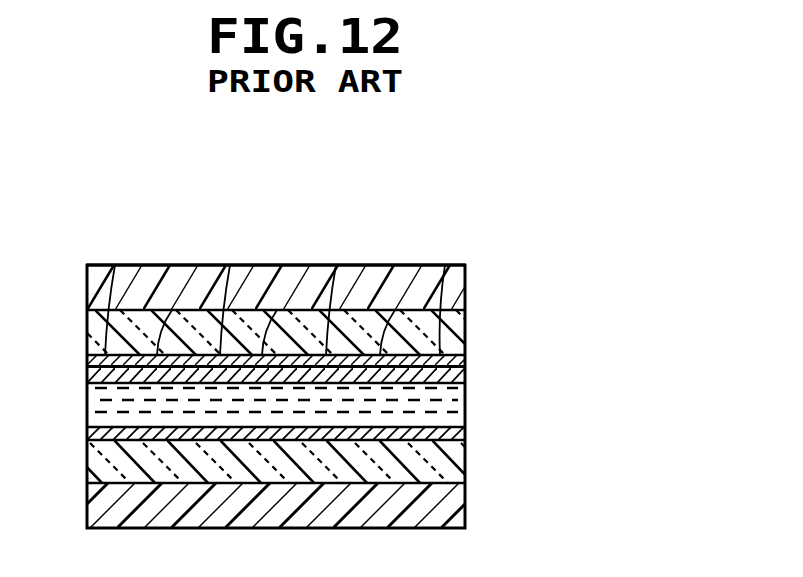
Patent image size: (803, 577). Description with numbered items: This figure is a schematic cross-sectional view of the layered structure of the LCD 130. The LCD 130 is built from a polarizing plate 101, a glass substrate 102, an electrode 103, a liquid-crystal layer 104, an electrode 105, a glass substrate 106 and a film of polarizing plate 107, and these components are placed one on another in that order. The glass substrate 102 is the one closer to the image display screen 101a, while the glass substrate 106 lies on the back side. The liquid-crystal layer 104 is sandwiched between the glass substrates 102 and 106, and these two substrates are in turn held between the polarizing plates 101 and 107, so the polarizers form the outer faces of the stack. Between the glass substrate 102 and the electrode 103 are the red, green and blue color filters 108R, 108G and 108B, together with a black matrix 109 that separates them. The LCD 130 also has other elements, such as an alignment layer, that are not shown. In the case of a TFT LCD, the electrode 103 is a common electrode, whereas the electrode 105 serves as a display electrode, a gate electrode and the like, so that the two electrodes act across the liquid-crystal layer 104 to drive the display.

The LCD 130 is at (441, 175).
The image display screen 101a is at (466, 267).
The polarizing plate 101 is at (455, 287).
The glass substrate 102 is at (455, 323).
The electrode 103 is at (455, 366).
The liquid-crystal layer 104 is at (465, 397).
The electrode 105 is at (465, 432).
The glass substrate 106 is at (465, 464).
The polarizing plate 107 is at (465, 502).
The R color filter 108R is at (172, 310).
The G color filter 108G is at (277, 310).
The B color filter 108B is at (395, 310).
The black matrix 109 is at (115, 265).